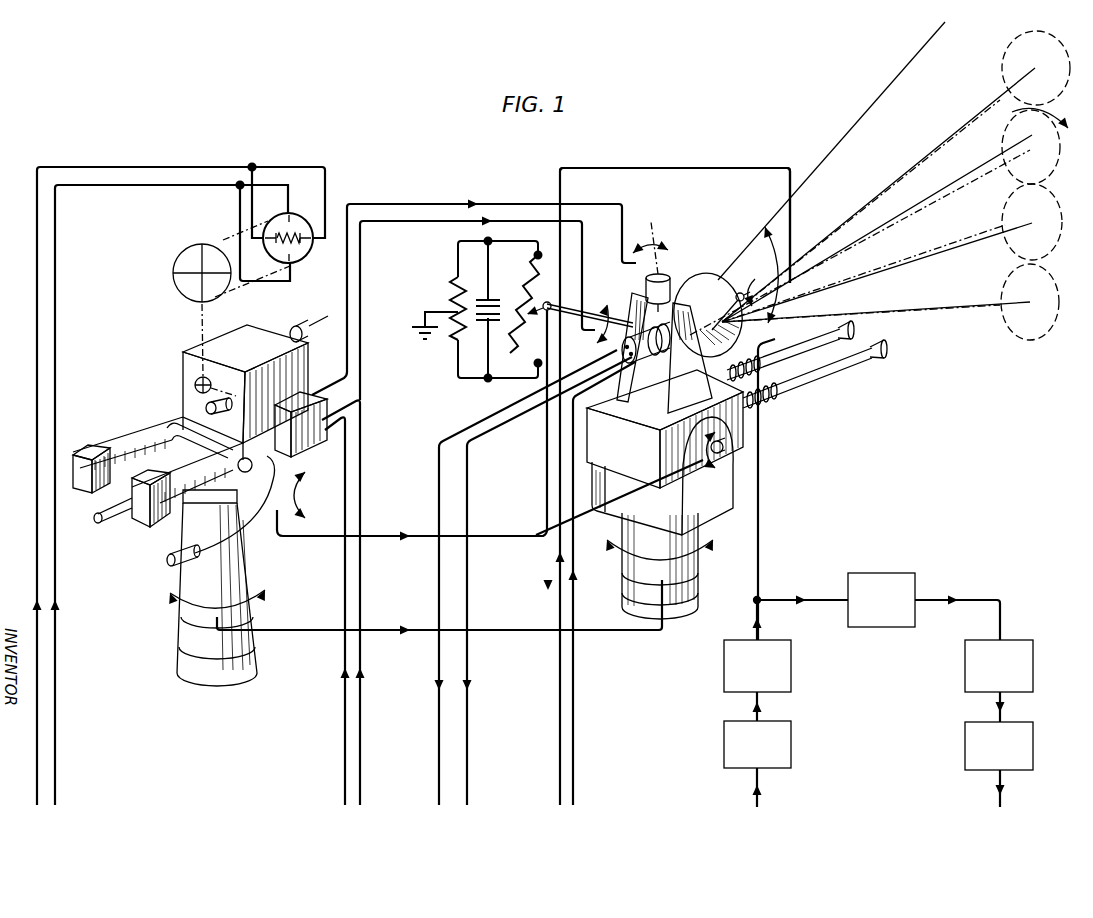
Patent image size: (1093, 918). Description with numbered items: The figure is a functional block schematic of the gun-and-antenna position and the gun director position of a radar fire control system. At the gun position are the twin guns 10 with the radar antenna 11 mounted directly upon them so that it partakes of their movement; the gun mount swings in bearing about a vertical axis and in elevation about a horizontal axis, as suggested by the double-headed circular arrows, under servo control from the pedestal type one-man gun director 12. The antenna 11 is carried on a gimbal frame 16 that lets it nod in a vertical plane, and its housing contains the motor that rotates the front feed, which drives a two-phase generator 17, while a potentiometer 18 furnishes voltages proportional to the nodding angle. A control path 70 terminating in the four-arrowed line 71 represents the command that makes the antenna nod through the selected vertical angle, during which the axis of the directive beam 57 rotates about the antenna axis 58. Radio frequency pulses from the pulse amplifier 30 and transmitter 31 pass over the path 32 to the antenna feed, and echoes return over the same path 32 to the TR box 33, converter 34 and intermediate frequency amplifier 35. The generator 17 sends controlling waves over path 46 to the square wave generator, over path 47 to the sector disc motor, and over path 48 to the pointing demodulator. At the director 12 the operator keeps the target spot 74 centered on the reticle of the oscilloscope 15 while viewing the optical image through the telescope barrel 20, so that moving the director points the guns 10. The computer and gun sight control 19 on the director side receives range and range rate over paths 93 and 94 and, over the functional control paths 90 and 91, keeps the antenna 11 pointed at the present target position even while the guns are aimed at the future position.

The twin guns 10 is at (824, 372).
The radar antenna 11 is at (700, 275).
The gun director 12 is at (182, 402).
The oscilloscope 15 is at (235, 236).
The gimbal frame 16 is at (626, 298).
The two-phase generator 17 is at (612, 345).
The potentiometer 18 is at (533, 254).
The computer and gun sight control 19 is at (313, 445).
The telescope barrel 20 is at (292, 327).
The pulse amplifier 30 is at (791, 735).
The transmitter 31 is at (791, 655).
The path 32 is at (767, 452).
The TR box 33 is at (878, 573).
The converter 34 is at (965, 660).
The intermediate frequency amplifier 35 is at (965, 738).
The path 46 is at (468, 584).
The path 47 is at (438, 584).
The path 48 is at (574, 662).
The directive beam 57 is at (965, 167).
The antenna axis 58 is at (924, 203).
The functional control path 70 is at (658, 168).
The four-arrowed line 71 is at (757, 240).
The spot 74 is at (193, 266).
The functional control path 90 is at (397, 204).
The functional control path 91 is at (428, 221).
The functional path 93 is at (361, 718).
The functional path 94 is at (344, 718).